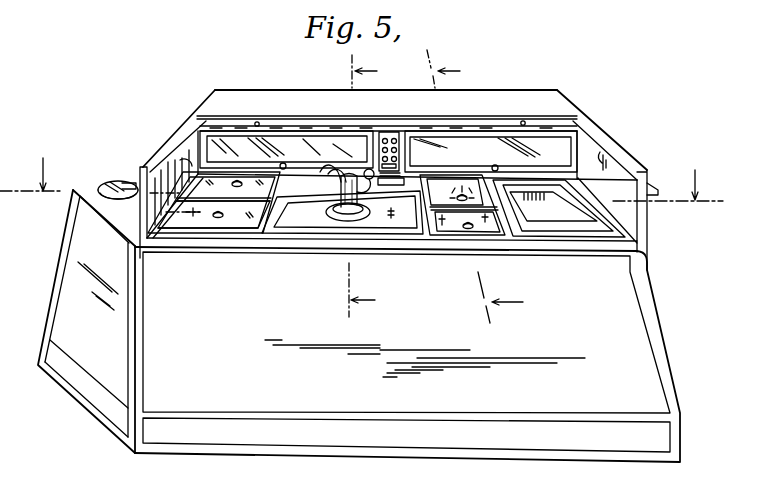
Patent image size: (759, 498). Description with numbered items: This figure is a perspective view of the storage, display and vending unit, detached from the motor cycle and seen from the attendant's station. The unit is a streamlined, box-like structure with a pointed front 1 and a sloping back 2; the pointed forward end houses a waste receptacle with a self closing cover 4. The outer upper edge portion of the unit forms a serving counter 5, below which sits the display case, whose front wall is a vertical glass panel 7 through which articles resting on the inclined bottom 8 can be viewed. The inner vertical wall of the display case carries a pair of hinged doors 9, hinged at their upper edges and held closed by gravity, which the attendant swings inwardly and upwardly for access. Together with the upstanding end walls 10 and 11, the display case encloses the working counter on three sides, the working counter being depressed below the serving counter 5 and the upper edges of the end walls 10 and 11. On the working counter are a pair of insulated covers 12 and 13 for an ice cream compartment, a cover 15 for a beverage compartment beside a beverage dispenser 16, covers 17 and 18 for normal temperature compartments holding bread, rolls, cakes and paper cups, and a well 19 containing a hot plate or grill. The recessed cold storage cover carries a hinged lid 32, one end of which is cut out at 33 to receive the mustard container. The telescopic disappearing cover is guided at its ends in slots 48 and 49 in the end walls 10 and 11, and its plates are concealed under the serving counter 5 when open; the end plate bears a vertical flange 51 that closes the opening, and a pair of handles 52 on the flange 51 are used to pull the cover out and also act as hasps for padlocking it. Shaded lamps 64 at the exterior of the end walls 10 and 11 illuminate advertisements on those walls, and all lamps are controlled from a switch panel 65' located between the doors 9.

The pointed front 1 is at (68, 282).
The sloping back 2 is at (662, 333).
The self closing cover 4 is at (113, 186).
The serving counter 5 is at (238, 92).
The vertical glass panel 7 is at (361, 180).
The inclined bottom 8 is at (365, 188).
The hinged doors 9 is at (212, 143).
The end wall 10 is at (166, 143).
The end wall 11 is at (612, 138).
The cover 12 is at (203, 222).
The cover 13 is at (250, 190).
The cover 15 is at (402, 230).
The beverage dispenser 16 is at (363, 198).
The cover 17 is at (473, 183).
The cover 18 is at (495, 226).
The well 19 is at (527, 214).
The hinged lid 32 is at (330, 168).
The cut out 33 is at (402, 180).
The slot 48 is at (192, 153).
The slot 49 is at (627, 154).
The vertical flange 51 is at (310, 124).
The handles 52 is at (258, 121).
The shaded lamps 64 is at (128, 183).
The switch panel 65' is at (393, 136).